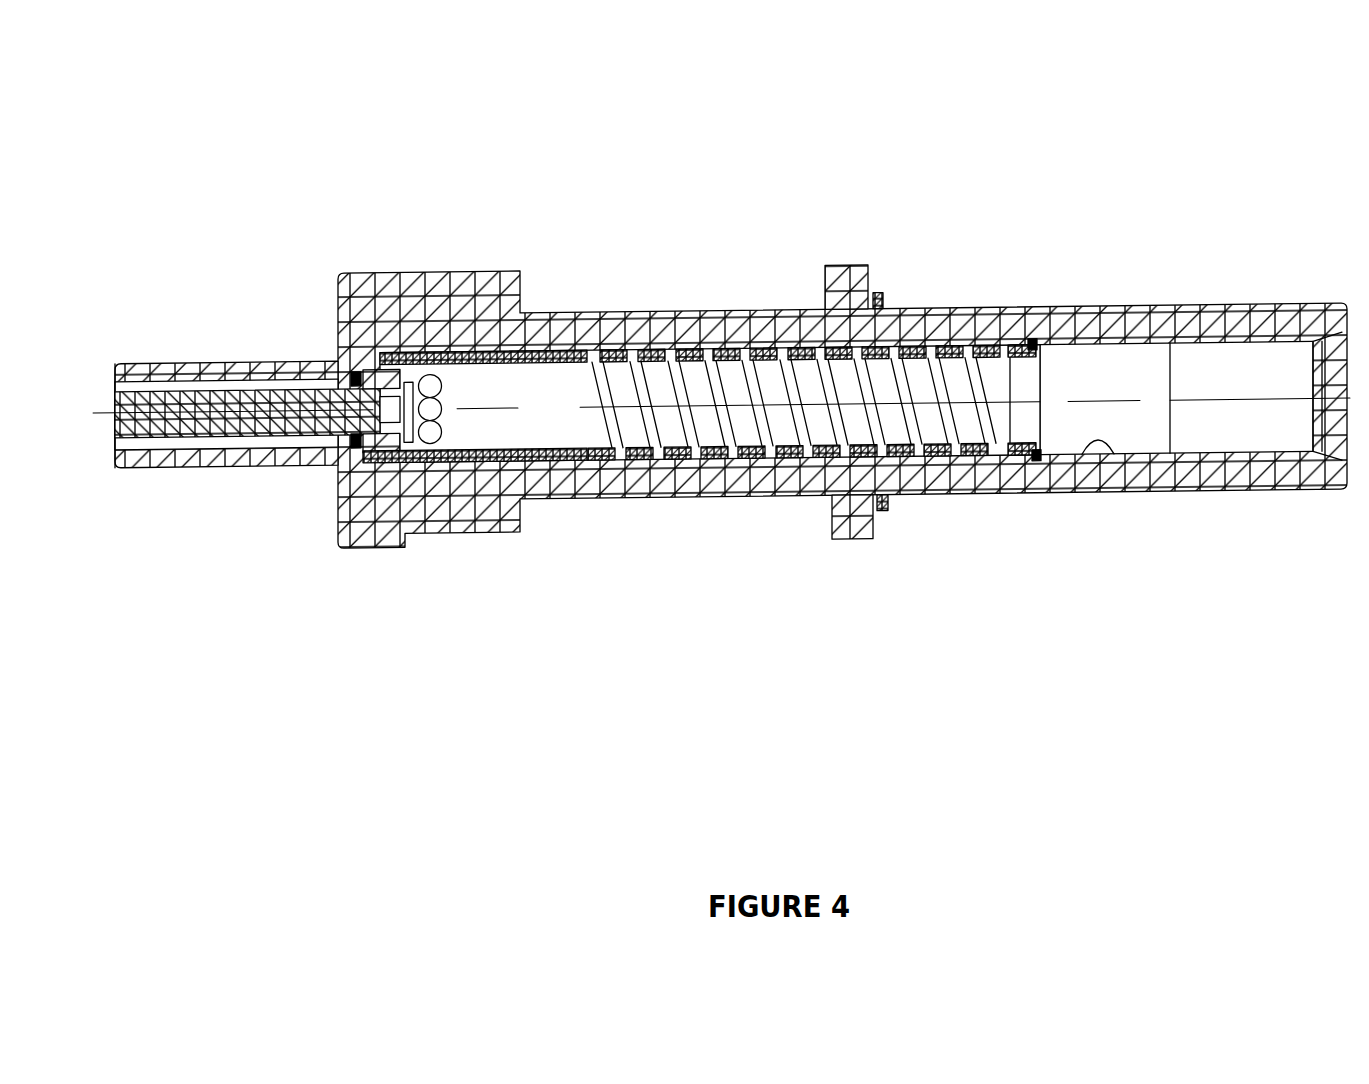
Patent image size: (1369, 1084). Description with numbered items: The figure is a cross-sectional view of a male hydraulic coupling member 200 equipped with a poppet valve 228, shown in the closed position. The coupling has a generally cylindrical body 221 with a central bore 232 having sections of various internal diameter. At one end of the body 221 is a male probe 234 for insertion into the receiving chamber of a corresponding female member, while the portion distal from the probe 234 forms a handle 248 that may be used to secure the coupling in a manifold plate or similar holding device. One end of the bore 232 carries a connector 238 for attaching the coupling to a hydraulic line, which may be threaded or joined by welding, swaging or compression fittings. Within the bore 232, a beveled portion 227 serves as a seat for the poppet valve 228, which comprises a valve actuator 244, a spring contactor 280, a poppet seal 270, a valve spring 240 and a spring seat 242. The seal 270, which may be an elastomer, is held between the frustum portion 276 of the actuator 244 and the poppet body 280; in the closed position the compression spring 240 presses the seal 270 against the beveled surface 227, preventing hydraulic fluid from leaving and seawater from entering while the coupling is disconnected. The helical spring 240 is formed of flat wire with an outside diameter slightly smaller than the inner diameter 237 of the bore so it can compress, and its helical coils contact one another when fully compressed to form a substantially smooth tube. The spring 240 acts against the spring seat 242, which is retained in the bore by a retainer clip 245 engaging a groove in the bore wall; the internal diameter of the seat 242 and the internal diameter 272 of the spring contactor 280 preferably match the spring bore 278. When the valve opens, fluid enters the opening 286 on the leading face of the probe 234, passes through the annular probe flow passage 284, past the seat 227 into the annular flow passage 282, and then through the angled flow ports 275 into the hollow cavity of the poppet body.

The male hydraulic coupling member 200 is at (993, 114).
The body 221 is at (428, 302).
The beveled portion 227 is at (383, 454).
The poppet valve 228 is at (353, 454).
The central bore 232 is at (1147, 396).
The male probe 234 is at (198, 364).
The inner diameter 237 is at (1110, 466).
The connector 238 is at (1280, 468).
The valve spring 240 is at (794, 484).
The spring seat 242 is at (1020, 466).
The valve actuator 244 is at (170, 414).
The retainer clip 245 is at (1033, 354).
The handle 248 is at (947, 320).
The poppet seal 270 is at (353, 380).
The internal diameter of spring contactor 272 is at (470, 434).
The angled flow ports 275 is at (447, 411).
The frustum portion 276 is at (350, 440).
The spring bore 278 is at (797, 460).
The spring contactor 280 is at (568, 463).
The annular flow passage 282 is at (388, 358).
The annular probe flow passage 284 is at (160, 386).
The opening 286 is at (112, 449).